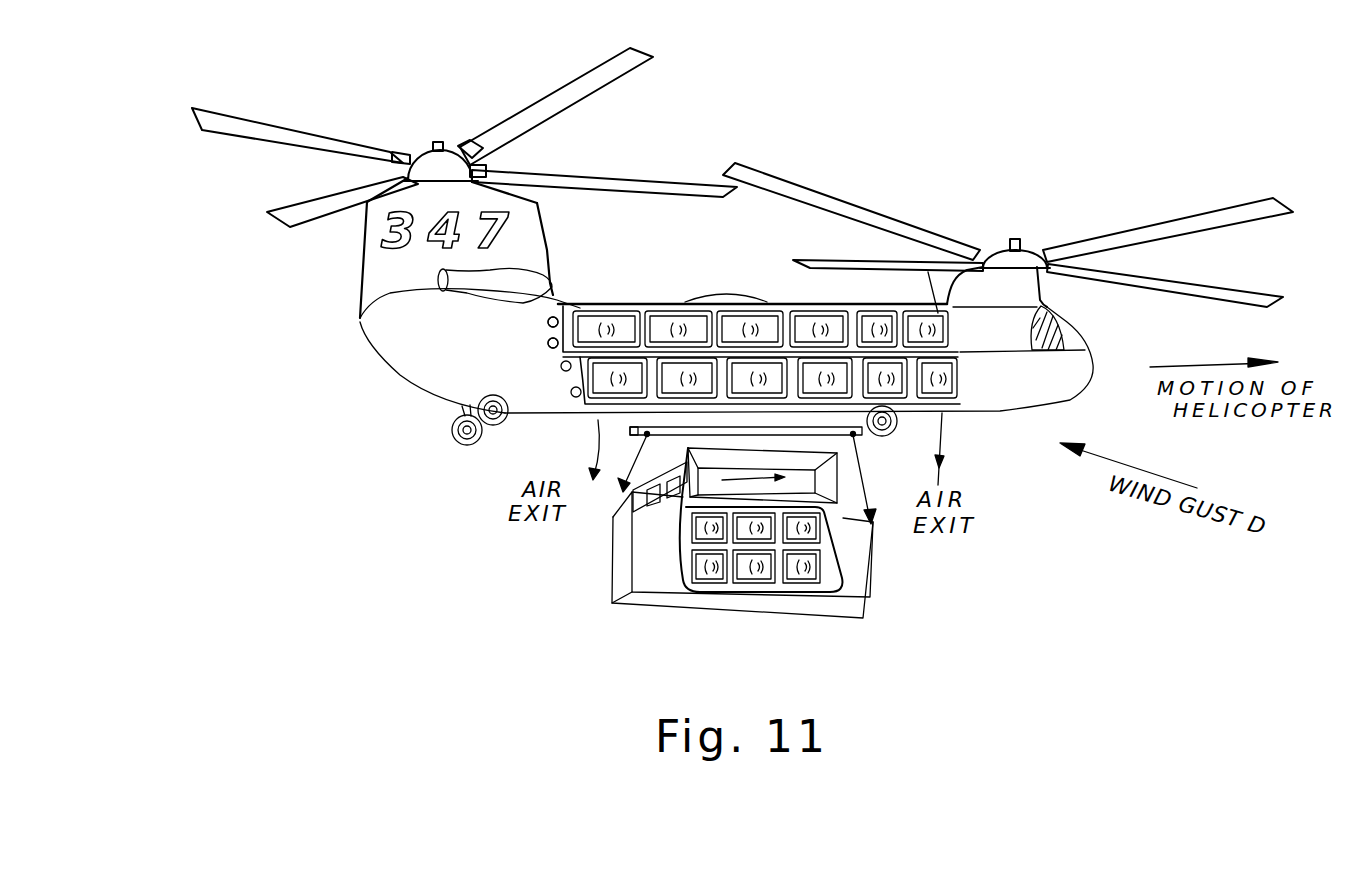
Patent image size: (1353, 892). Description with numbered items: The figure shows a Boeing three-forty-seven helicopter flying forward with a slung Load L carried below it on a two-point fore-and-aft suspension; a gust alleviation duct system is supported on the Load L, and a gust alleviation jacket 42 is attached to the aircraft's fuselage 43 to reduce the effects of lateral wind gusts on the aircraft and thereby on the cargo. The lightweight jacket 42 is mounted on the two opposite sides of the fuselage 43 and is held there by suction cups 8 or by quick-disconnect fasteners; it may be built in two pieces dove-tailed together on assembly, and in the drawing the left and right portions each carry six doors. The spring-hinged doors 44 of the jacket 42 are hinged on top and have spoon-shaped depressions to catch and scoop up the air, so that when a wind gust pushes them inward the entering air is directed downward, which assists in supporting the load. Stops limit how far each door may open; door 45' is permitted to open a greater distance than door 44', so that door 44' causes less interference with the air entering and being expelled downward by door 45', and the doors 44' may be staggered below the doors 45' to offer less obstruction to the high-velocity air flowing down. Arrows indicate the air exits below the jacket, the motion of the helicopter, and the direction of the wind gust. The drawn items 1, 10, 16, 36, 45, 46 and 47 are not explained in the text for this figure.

The load container 1 is at (612, 557).
The suction cups 8 is at (549, 344).
The cargo hook beam 10 is at (703, 450).
The spacing dimension 16 is at (925, 277).
The bracket 36 is at (673, 472).
The lightweight jacket 42 is at (548, 328).
The fuselage 43 is at (563, 307).
The doors 44 is at (740, 379).
The door 44' is at (775, 416).
The air jet nozzle 45 is at (626, 294).
The door 45' is at (840, 298).
The lower nozzle panel on load 46 is at (823, 570).
The upper nozzle panel on load 47 is at (823, 528).
The Load L is at (873, 587).